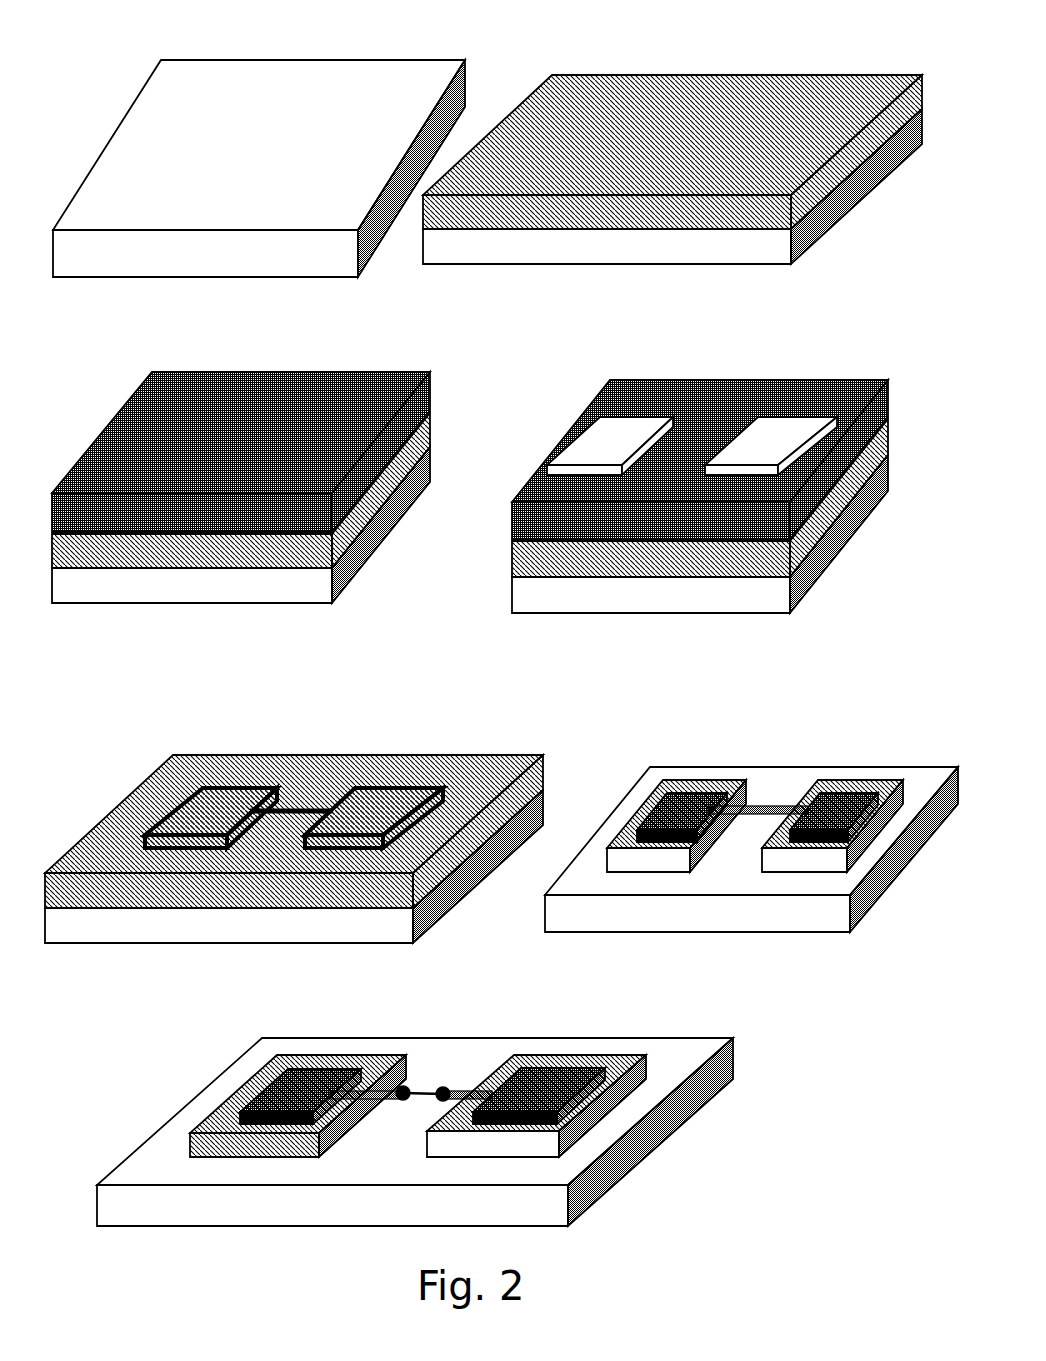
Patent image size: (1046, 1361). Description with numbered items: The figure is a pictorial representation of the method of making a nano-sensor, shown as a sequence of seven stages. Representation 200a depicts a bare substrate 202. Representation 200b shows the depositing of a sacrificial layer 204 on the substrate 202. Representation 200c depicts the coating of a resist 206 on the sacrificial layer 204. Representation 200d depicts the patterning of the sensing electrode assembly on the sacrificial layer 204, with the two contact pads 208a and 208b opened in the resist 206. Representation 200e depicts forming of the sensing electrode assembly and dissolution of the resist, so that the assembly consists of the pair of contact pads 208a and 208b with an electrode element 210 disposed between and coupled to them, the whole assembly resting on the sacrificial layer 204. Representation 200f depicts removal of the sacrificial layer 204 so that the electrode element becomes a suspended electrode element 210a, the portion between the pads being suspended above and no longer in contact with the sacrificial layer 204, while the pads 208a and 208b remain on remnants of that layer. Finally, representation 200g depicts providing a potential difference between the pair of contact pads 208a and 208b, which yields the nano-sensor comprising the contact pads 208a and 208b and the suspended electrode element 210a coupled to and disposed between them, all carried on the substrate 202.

The representation of substrate block 200a is at (262, 31).
The representation of sacrificial layer deposition 200b is at (700, 31).
The representation of resist coating 200c is at (243, 366).
The representation of electrode assembly patterning 200d is at (780, 346).
The representation of electrode assembly formation 200e is at (278, 734).
The representation of sacrificial layer removal 200f is at (813, 751).
The representation of potential difference application 200g is at (370, 1026).
The substrate 202 is at (287, 73).
The sacrificial layer 204 is at (603, 220).
The resist 206 is at (330, 388).
The contact pad 208a is at (637, 451).
The contact pad 208b is at (790, 453).
The electrode element 210 is at (700, 447).
The suspended electrode element 210a is at (768, 807).